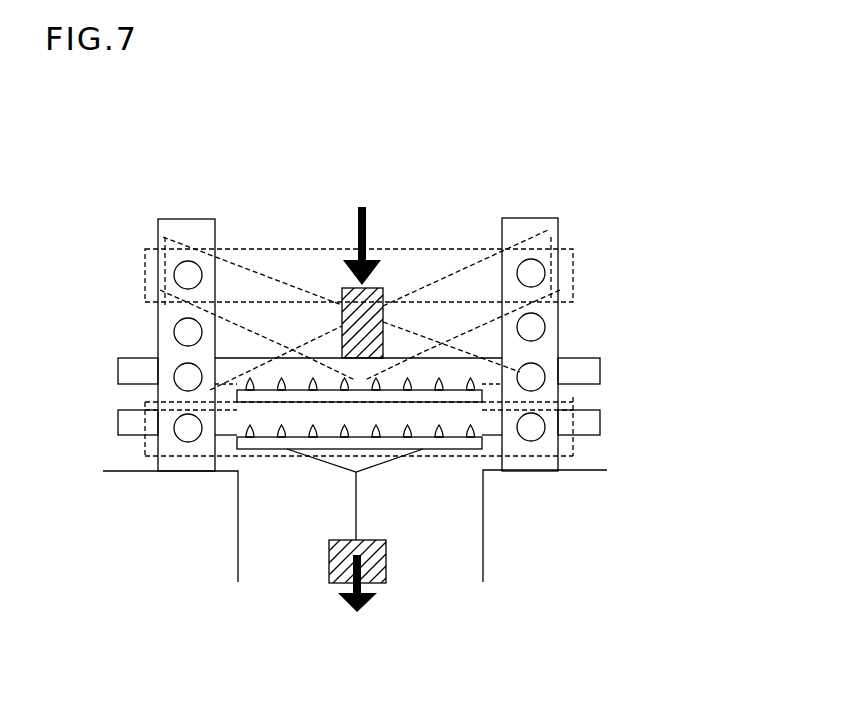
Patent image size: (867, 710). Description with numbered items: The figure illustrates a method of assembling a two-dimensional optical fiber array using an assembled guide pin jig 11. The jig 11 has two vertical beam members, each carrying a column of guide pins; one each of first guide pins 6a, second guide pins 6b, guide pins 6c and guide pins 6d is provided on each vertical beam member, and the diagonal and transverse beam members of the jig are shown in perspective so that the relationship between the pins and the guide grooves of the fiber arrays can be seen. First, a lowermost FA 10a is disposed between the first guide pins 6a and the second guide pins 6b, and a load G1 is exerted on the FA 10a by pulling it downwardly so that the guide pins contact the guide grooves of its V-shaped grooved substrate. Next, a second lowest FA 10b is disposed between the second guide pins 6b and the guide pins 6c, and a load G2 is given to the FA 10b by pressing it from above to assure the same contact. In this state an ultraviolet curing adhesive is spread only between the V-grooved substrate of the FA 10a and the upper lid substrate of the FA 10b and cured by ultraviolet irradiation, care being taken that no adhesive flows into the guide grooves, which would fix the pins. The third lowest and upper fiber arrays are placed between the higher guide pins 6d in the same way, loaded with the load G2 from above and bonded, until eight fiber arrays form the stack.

The first guide pins 6a is at (187, 430).
The second guide pins 6b is at (180, 383).
The guide pins 6c is at (186, 332).
The guide pins 6d is at (186, 274).
The lowermost FA 10a is at (585, 412).
The second lowest FA 10b is at (585, 368).
The guide pin jig 11 is at (527, 218).
The load G1 is at (360, 574).
The load G2 is at (365, 298).